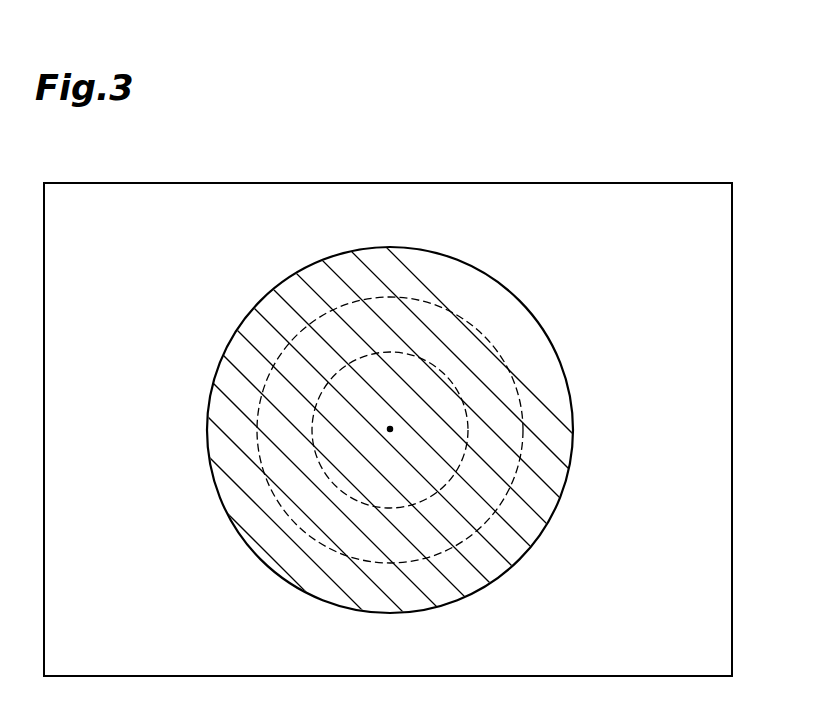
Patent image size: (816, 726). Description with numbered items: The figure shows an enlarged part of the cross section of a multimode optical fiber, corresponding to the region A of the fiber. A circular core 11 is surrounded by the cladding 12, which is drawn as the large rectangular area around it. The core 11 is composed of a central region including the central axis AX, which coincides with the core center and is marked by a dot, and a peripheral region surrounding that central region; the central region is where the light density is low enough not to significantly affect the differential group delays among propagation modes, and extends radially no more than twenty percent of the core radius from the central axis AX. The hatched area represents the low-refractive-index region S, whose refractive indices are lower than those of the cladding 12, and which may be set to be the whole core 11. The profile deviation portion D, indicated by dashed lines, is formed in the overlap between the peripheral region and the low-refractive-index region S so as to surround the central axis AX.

The core 11 is at (573, 417).
The cladding 12 is at (732, 490).
The region A is at (733, 677).
The profile deviation portion D is at (258, 403).
The central axis AX is at (391, 426).
The low-refractive-index region S is at (401, 584).